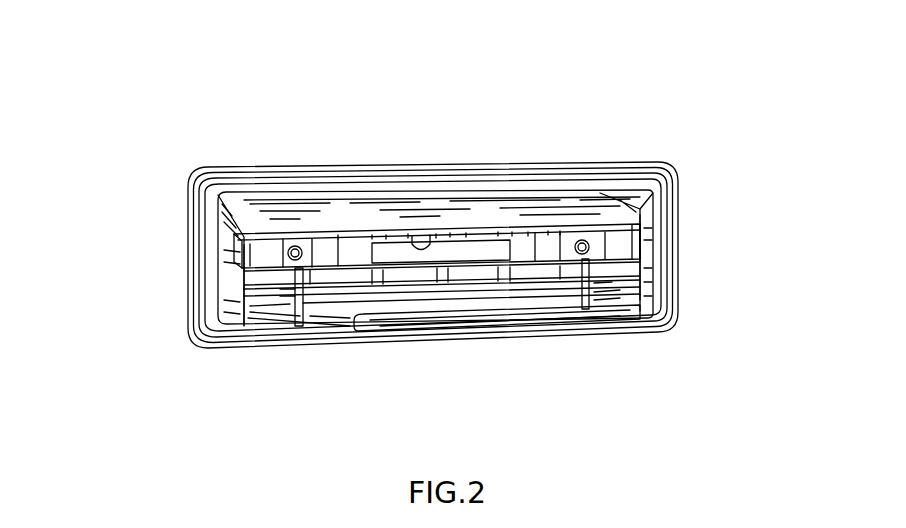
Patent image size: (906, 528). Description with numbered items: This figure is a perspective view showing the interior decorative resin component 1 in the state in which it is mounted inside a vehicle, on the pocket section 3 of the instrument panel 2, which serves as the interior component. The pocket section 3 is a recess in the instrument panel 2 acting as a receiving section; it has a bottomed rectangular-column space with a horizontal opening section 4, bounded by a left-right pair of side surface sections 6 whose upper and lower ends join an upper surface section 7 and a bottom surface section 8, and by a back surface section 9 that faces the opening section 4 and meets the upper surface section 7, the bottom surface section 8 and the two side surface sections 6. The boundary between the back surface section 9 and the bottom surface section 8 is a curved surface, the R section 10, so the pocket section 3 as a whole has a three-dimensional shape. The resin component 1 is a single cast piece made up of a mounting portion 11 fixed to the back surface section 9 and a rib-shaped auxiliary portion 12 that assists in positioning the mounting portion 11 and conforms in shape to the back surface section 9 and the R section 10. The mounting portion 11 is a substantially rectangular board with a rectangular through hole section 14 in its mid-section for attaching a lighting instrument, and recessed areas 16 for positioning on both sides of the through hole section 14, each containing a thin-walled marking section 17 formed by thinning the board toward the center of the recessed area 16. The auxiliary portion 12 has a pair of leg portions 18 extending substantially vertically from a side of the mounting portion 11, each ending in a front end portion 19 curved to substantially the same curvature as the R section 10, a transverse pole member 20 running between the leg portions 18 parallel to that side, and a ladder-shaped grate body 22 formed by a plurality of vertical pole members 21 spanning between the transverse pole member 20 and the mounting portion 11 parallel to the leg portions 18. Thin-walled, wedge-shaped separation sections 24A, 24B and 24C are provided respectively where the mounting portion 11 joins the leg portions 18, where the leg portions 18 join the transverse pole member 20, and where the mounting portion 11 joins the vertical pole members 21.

The interior decorative resin component 1 is at (482, 223).
The instrument panel 2 is at (494, 162).
The pocket section 3 is at (450, 322).
The opening section 4 is at (624, 208).
The side surface sections 6 is at (224, 233).
The upper surface section 7 is at (375, 245).
The bottom surface section 8 is at (345, 328).
The back surface section 9 is at (292, 291).
The R section 10 is at (270, 312).
The mounting portion 11 is at (326, 227).
The auxiliary portion 12 is at (593, 294).
The through hole section 14 is at (419, 236).
The recessed areas 16 is at (262, 238).
The marking section 17 is at (290, 246).
The leg portions 18 is at (262, 306).
The front end portion 19 is at (298, 322).
The transverse pole member 20 is at (513, 305).
The vertical pole members 21 is at (442, 284).
The grate body 22 is at (498, 296).
The separation sections 24A is at (270, 282).
The separation sections 24B is at (322, 328).
The separation sections 24C is at (372, 255).